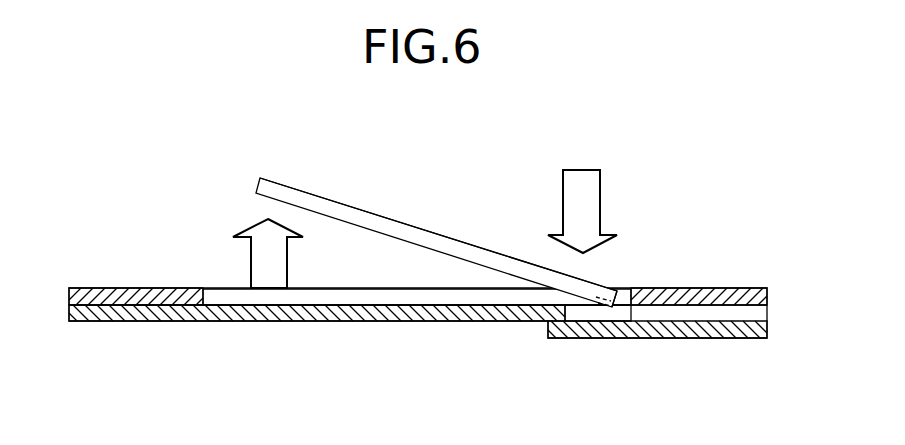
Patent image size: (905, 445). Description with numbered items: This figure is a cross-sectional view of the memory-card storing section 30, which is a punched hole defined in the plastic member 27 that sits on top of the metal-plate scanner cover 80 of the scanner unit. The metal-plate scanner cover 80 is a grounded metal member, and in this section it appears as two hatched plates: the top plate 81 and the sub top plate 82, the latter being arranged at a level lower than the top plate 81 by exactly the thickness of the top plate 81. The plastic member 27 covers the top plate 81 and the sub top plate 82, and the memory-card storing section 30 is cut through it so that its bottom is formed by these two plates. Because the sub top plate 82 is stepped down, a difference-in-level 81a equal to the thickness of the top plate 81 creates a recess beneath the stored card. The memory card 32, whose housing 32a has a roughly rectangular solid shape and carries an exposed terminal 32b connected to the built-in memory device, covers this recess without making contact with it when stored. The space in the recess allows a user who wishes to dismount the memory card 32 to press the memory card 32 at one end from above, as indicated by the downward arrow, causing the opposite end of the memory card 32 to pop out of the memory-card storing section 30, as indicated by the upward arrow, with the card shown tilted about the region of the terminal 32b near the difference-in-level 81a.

The plastic member 27 is at (84, 275).
The memory-card storing section 30 is at (208, 264).
The memory card 32 is at (464, 208).
The housing 32a is at (470, 230).
The terminal 32b is at (625, 282).
The metal-plate scanner cover 80 is at (287, 330).
The top plate 81 is at (389, 334).
The difference-in-level 81a is at (577, 322).
The sub top plate 82 is at (756, 347).